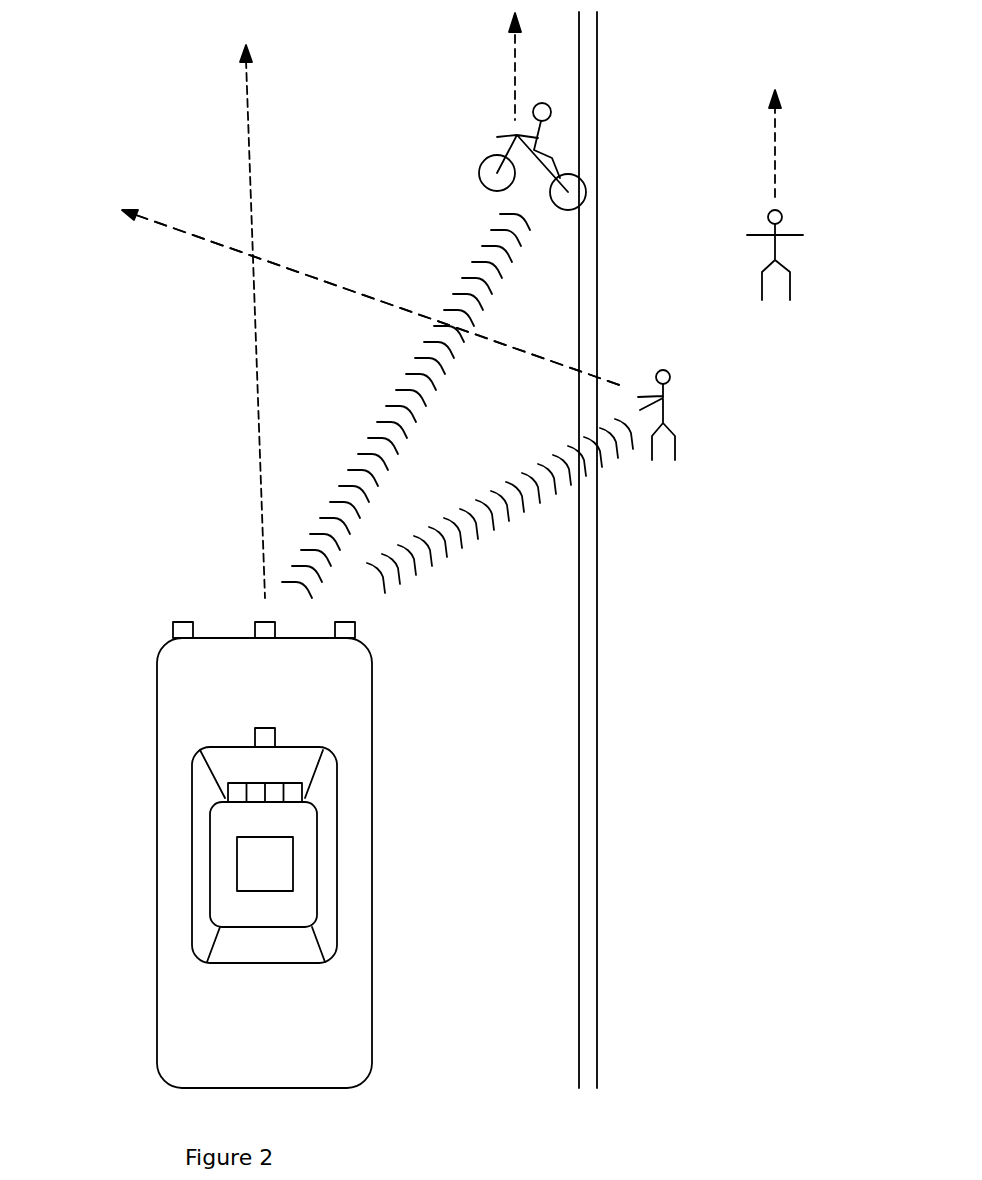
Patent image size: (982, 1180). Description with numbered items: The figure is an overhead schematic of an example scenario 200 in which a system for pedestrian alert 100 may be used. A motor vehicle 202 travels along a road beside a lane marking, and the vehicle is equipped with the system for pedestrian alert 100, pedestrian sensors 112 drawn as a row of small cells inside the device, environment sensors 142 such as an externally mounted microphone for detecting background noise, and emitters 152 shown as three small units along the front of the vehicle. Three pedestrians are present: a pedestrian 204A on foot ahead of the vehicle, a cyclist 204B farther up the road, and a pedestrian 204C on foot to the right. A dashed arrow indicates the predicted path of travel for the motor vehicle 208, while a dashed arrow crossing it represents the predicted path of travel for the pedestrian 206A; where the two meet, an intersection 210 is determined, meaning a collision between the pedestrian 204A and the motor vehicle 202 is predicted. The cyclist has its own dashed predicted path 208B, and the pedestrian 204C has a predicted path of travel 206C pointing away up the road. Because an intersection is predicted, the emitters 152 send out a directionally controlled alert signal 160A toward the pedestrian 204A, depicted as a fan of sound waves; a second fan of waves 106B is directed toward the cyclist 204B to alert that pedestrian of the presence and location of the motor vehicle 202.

The example scenario 200 is at (86, 66).
The motor vehicle 202 is at (157, 1060).
The emitters 152 is at (392, 613).
The environment sensors 142 is at (276, 739).
The system for pedestrian alert 100 is at (237, 860).
The pedestrian sensors 112 is at (228, 790).
The predicted path of travel for the motor vehicle 208 is at (258, 431).
The predicted path of travel for the pedestrian 206A is at (335, 287).
The intersection 210 is at (252, 258).
The trajectory of cyclist 204B 208B is at (510, 75).
The pedestrian 204B is at (586, 197).
The predicted path of travel for the pedestrian 206C is at (785, 145).
The pedestrian 204C is at (800, 270).
The pedestrian 204A is at (676, 412).
The sensor field of view / beam 106B is at (372, 414).
The alert signal 160A is at (530, 468).